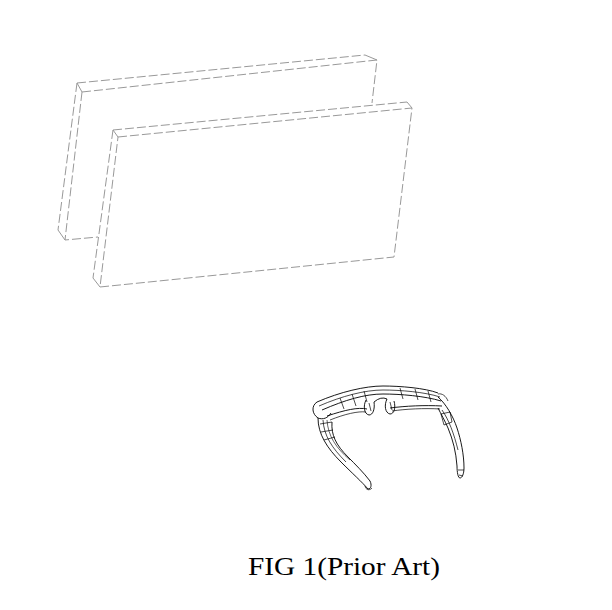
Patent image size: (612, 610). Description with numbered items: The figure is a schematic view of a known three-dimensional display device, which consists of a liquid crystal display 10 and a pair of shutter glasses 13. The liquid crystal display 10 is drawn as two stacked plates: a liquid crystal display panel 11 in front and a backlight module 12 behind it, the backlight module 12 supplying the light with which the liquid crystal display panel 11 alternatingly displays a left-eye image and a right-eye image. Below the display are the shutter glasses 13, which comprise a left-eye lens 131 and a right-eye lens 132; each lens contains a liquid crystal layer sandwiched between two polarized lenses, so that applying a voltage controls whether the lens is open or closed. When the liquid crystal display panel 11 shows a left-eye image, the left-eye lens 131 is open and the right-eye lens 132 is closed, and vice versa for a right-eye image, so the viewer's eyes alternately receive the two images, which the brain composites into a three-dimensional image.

The liquid crystal display 10 is at (456, 38).
The liquid crystal display panel 11 is at (412, 108).
The backlight module 12 is at (377, 60).
The shutter glasses 13 is at (425, 393).
The left-eye lens 131 is at (348, 395).
The right-eye lens 132 is at (397, 388).